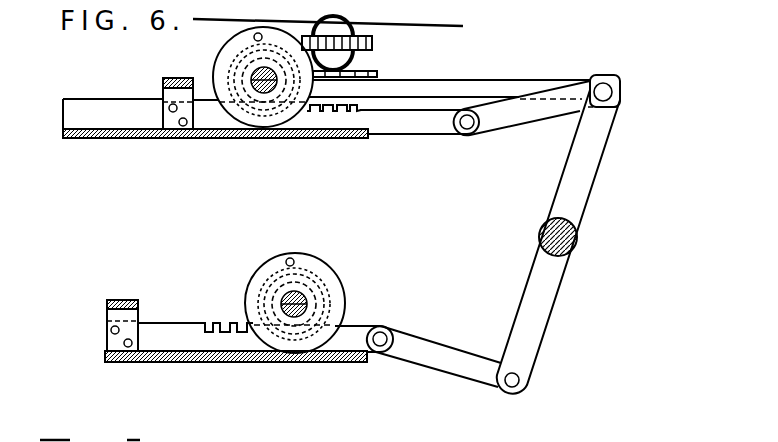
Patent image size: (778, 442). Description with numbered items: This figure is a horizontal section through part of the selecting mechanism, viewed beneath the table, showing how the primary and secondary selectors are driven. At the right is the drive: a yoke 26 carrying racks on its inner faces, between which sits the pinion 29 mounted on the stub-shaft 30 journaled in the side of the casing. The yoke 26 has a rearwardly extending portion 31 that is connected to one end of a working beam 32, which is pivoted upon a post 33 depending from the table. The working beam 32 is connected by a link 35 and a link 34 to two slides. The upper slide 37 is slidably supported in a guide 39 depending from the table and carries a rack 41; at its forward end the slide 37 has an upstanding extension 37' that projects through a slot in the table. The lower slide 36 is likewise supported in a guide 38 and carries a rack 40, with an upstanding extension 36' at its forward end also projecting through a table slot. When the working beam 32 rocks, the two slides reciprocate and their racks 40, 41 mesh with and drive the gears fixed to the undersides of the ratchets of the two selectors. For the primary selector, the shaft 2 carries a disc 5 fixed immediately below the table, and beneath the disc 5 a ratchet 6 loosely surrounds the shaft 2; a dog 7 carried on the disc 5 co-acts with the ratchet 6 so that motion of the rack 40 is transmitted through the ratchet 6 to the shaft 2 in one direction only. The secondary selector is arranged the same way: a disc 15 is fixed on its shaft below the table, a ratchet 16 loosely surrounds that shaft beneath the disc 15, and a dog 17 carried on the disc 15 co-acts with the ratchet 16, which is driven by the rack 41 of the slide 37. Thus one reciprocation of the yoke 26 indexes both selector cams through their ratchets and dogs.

The shaft 2 is at (292, 313).
The disc 5 is at (332, 272).
The ratchet 6 is at (328, 307).
The dog 7 is at (303, 258).
The disc 15 is at (230, 53).
The ratchet 16 is at (233, 72).
The dog 17 is at (280, 52).
The yoke 26 is at (427, 87).
The pinion 29 is at (368, 73).
The stub-shaft 30 is at (338, 33).
The rearwardly extending portion 31 is at (547, 80).
The working beam 32 is at (592, 158).
The post 33 is at (582, 237).
The link 34 is at (410, 368).
The link 35 is at (512, 102).
The slide 36 is at (263, 303).
The upstanding extension 36' is at (84, 299).
The slide 37 is at (336, 149).
The upstanding extension 37' is at (134, 97).
The guide 38 is at (227, 360).
The guide 39 is at (200, 138).
The rack 40 is at (227, 323).
The rack 41 is at (343, 110).